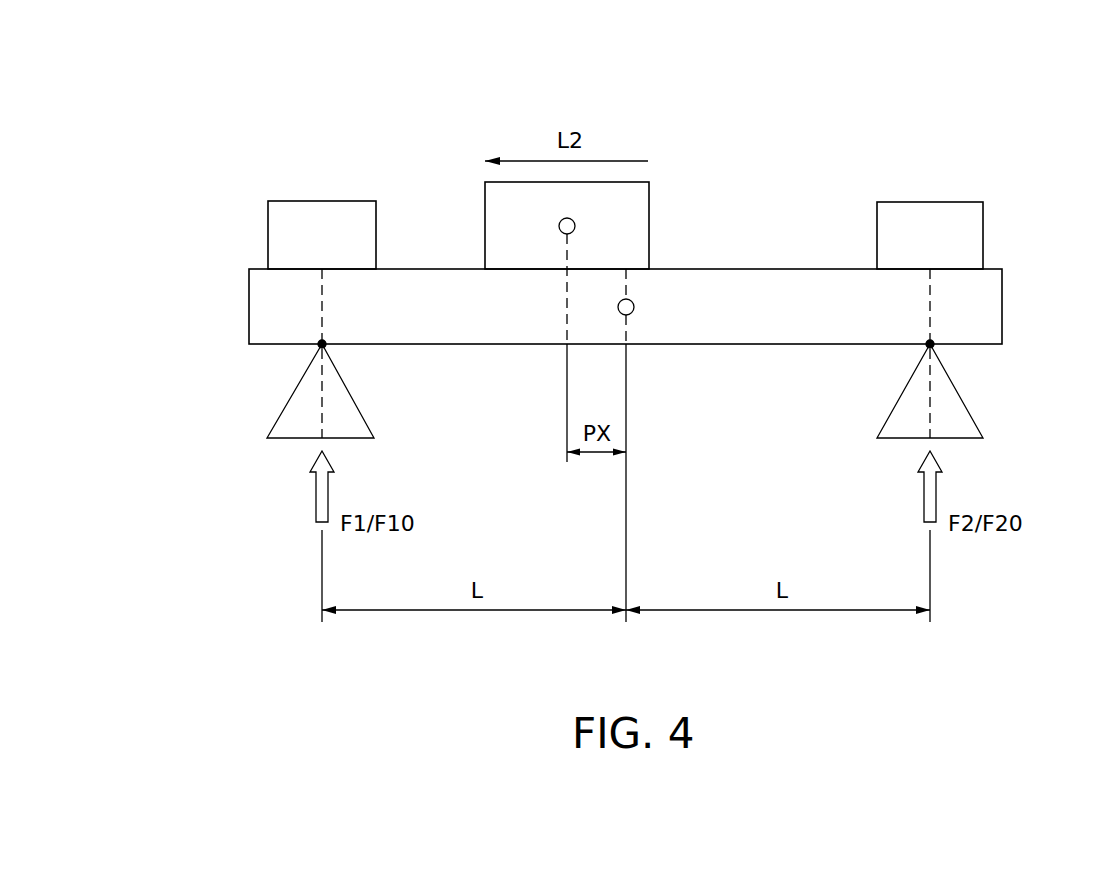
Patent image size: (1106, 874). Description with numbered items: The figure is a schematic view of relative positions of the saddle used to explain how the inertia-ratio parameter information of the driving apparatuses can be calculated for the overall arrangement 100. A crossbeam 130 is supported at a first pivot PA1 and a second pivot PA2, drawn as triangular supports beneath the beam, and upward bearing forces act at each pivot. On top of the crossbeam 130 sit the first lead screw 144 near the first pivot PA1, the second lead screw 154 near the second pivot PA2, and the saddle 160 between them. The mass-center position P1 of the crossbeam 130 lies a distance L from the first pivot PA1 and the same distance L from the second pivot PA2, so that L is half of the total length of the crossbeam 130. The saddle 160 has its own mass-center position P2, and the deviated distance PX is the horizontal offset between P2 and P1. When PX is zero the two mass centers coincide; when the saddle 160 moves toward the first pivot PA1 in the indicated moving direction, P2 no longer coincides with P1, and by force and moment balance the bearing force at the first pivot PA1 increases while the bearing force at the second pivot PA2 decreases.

The display device / system 100 is at (196, 72).
The crossbeam 130 is at (985, 305).
The first lead screw 144 is at (364, 232).
The second lead screw 154 is at (970, 233).
The saddle 160 is at (634, 209).
The mass-center position of the crossbeam P1 is at (634, 310).
The mass-center position of the saddle P2 is at (558, 226).
The first pivot PA1 is at (320, 346).
The second pivot PA2 is at (935, 347).